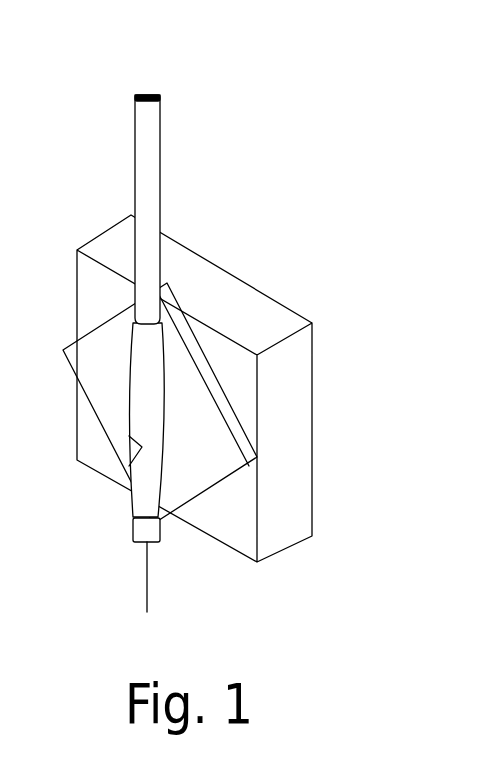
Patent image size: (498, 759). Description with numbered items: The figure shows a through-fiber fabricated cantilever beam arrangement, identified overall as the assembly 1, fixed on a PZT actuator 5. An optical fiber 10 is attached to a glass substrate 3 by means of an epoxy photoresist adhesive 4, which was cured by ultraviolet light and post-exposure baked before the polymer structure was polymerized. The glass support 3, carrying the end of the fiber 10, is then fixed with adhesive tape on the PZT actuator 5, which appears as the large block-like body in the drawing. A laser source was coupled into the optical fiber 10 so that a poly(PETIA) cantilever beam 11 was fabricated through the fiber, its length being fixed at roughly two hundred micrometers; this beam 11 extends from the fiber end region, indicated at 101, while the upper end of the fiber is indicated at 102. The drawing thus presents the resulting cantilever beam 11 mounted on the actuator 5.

The sensor device 1 is at (305, 223).
The glass substrate 3 is at (223, 461).
The SU-8 4 is at (129, 447).
The PZT actuator 5 is at (312, 323).
The optical fiber 10 is at (160, 150).
The cantilever beam 11 is at (147, 588).
The connector 101 is at (160, 533).
The rod tip 102 is at (142, 97).